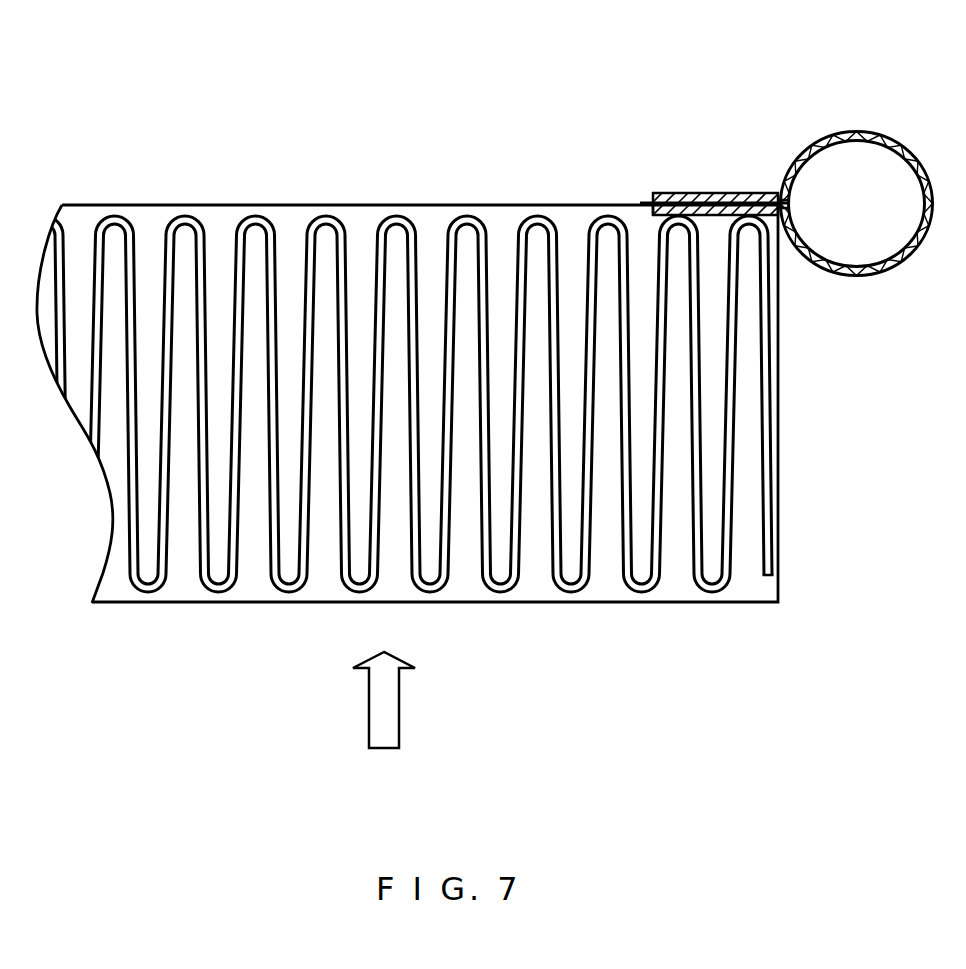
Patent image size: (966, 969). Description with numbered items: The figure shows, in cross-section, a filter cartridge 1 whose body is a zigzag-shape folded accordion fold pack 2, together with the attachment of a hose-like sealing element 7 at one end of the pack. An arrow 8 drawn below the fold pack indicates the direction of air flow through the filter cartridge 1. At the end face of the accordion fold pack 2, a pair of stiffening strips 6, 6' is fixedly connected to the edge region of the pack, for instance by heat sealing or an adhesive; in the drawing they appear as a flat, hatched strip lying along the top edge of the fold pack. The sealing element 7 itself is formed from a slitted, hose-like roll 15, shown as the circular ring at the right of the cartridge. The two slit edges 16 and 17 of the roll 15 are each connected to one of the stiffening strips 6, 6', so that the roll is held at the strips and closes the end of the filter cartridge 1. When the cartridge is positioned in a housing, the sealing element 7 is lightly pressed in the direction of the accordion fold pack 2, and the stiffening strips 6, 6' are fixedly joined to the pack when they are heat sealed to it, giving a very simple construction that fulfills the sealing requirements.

The filter cartridge 1 is at (252, 188).
The accordion fold pack 2 is at (270, 578).
The stiffening strip 6 is at (722, 135).
The stiffening strip 6' is at (600, 152).
The sealing element 7 is at (888, 140).
The arrow 8 is at (385, 727).
The hose-like roll 15 is at (858, 278).
The slit edge 16 is at (788, 200).
The slit edge 17 is at (788, 208).